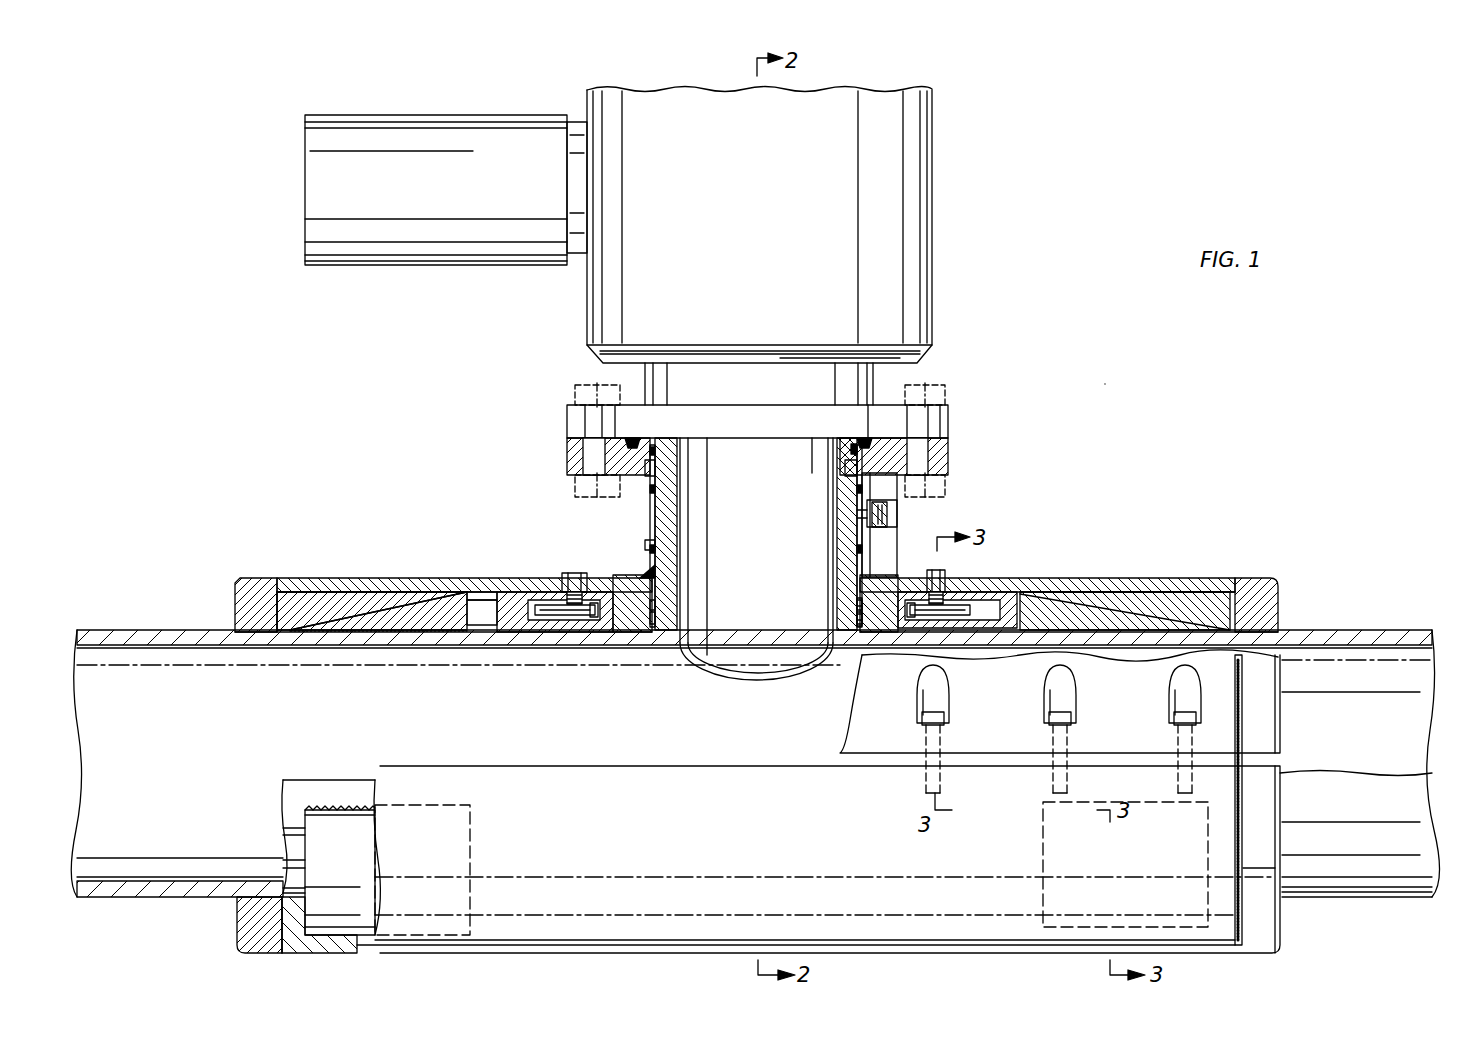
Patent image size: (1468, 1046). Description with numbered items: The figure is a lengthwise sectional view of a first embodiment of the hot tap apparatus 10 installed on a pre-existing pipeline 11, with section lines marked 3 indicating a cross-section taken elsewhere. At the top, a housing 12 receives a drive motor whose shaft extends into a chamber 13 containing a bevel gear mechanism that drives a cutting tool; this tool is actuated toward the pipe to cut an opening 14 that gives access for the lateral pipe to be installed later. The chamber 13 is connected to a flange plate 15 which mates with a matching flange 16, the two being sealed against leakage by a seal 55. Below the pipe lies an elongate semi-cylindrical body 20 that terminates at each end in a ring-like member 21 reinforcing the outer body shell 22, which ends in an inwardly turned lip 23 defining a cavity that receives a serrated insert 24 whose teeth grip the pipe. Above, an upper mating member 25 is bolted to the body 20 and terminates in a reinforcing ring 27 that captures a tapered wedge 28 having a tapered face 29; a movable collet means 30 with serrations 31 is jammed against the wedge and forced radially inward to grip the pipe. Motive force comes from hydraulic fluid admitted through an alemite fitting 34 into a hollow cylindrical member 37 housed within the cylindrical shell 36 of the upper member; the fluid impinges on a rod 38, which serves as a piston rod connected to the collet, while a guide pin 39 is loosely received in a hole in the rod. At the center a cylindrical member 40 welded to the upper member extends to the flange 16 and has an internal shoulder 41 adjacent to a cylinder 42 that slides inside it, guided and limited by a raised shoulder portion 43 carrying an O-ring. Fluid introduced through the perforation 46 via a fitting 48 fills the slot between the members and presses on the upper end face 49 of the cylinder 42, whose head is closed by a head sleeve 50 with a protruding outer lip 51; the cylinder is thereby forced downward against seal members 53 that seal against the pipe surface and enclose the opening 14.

The hot tap apparatus 10 is at (1105, 384).
The pipeline 11 is at (1345, 630).
The housing 12 is at (386, 265).
The chamber 13 is at (932, 142).
The opening 14 is at (750, 680).
The flange plate 15 is at (950, 418).
The matching flange 16 is at (950, 450).
The semi-cylindrical body 20 is at (781, 801).
The ring-like member 21 is at (240, 930).
The body shell 22 is at (492, 952).
The lip 23 is at (300, 915).
The insert 24 is at (327, 847).
The upper mating member 25 is at (340, 580).
The reinforcing ring 27 is at (235, 607).
The tapered wedge 28 is at (298, 595).
The tapered face 29 is at (305, 632).
The collet means 30 is at (428, 625).
The serrations 31 is at (340, 640).
The alemite fitting 34 is at (565, 575).
The cylindrical shell 36 is at (440, 580).
The hollow cylindrical member 37 is at (605, 625).
The rod 38 is at (488, 625).
The guide pin 39 is at (575, 615).
The cylindrical member 40 is at (652, 520).
The internal shoulder 41 is at (667, 590).
The cylinder 42 is at (672, 520).
The shoulder portion 43 is at (648, 553).
The perforation 46 is at (865, 514).
The fitting 48 is at (888, 520).
The upper end face 49 is at (864, 470).
The head sleeve 50 is at (690, 466).
The outer lip 51 is at (855, 440).
The seal members 53 is at (847, 612).
The seal 55 is at (632, 446).
The sensor probes 3 is at (1059, 729).